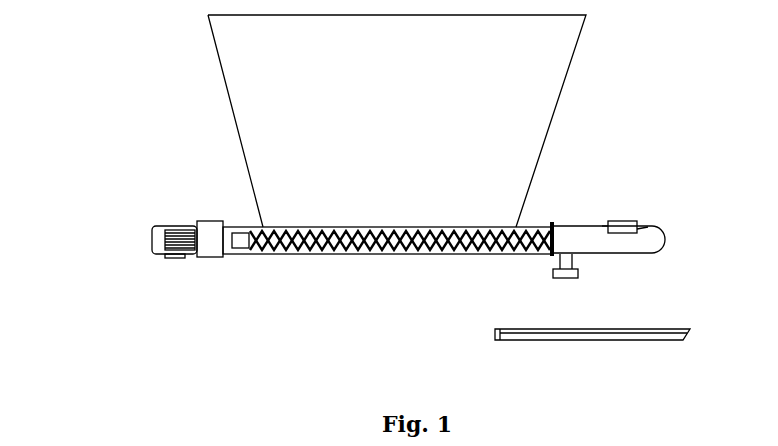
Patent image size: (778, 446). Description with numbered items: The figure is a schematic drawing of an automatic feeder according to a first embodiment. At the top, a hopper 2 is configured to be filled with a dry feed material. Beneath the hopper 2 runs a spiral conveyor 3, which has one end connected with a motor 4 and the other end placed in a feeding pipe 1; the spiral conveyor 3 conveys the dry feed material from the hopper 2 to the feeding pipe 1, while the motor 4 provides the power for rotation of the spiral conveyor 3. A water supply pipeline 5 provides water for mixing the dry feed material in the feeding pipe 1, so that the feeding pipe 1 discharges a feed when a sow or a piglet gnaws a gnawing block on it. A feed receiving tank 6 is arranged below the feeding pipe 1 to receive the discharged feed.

The feeding pipe 1 is at (592, 238).
The hopper 2 is at (255, 108).
The spiral conveyor 3 is at (362, 229).
The motor 4 is at (153, 226).
The water supply pipeline 5 is at (658, 303).
The feed receiving tank 6 is at (507, 329).